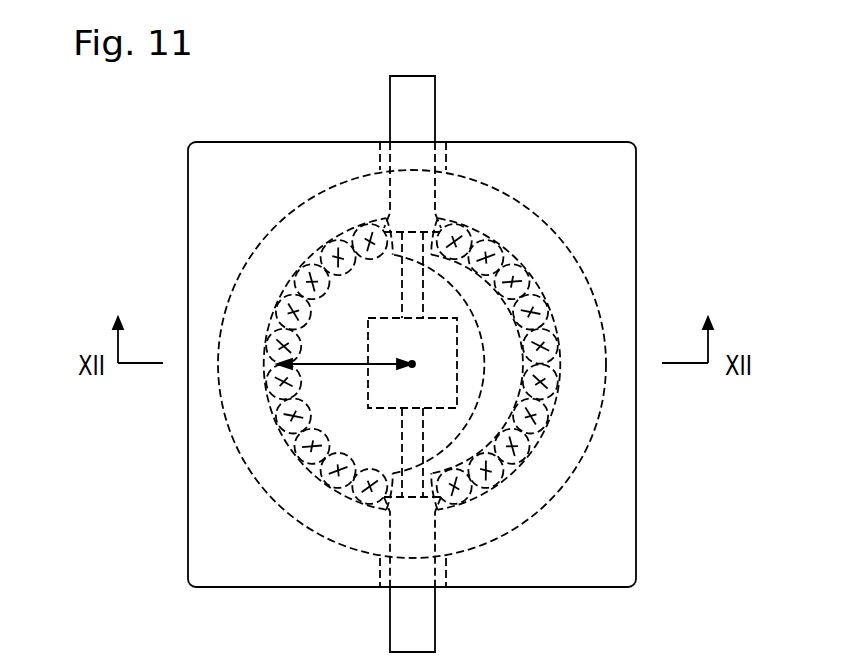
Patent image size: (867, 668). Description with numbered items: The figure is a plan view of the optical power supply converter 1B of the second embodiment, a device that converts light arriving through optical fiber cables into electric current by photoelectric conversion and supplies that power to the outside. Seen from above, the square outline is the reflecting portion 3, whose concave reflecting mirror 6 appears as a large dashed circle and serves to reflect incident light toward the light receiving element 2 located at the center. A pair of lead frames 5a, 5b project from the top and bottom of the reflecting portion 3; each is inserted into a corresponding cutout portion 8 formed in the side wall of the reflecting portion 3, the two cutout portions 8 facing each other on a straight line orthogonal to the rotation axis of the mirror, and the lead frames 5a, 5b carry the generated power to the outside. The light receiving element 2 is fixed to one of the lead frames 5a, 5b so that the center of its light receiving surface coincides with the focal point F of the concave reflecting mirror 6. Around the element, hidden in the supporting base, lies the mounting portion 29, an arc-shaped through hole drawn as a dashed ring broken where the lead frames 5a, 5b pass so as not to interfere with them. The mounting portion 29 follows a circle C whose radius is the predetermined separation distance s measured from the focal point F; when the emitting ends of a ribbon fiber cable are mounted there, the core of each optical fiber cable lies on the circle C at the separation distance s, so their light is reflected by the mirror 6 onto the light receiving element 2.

The optical power supply converter 1B is at (158, 137).
The reflecting portion 3 is at (250, 142).
The lead frame 5a is at (435, 107).
The lead frame 5b is at (435, 618).
The cutout portion 8 is at (398, 156).
The concave reflecting mirror 6 is at (581, 263).
The light receiving element 2 is at (442, 317).
The circle C is at (430, 233).
The mounting portion 29 is at (560, 368).
The separation distance s is at (346, 362).
The focal point F is at (414, 364).